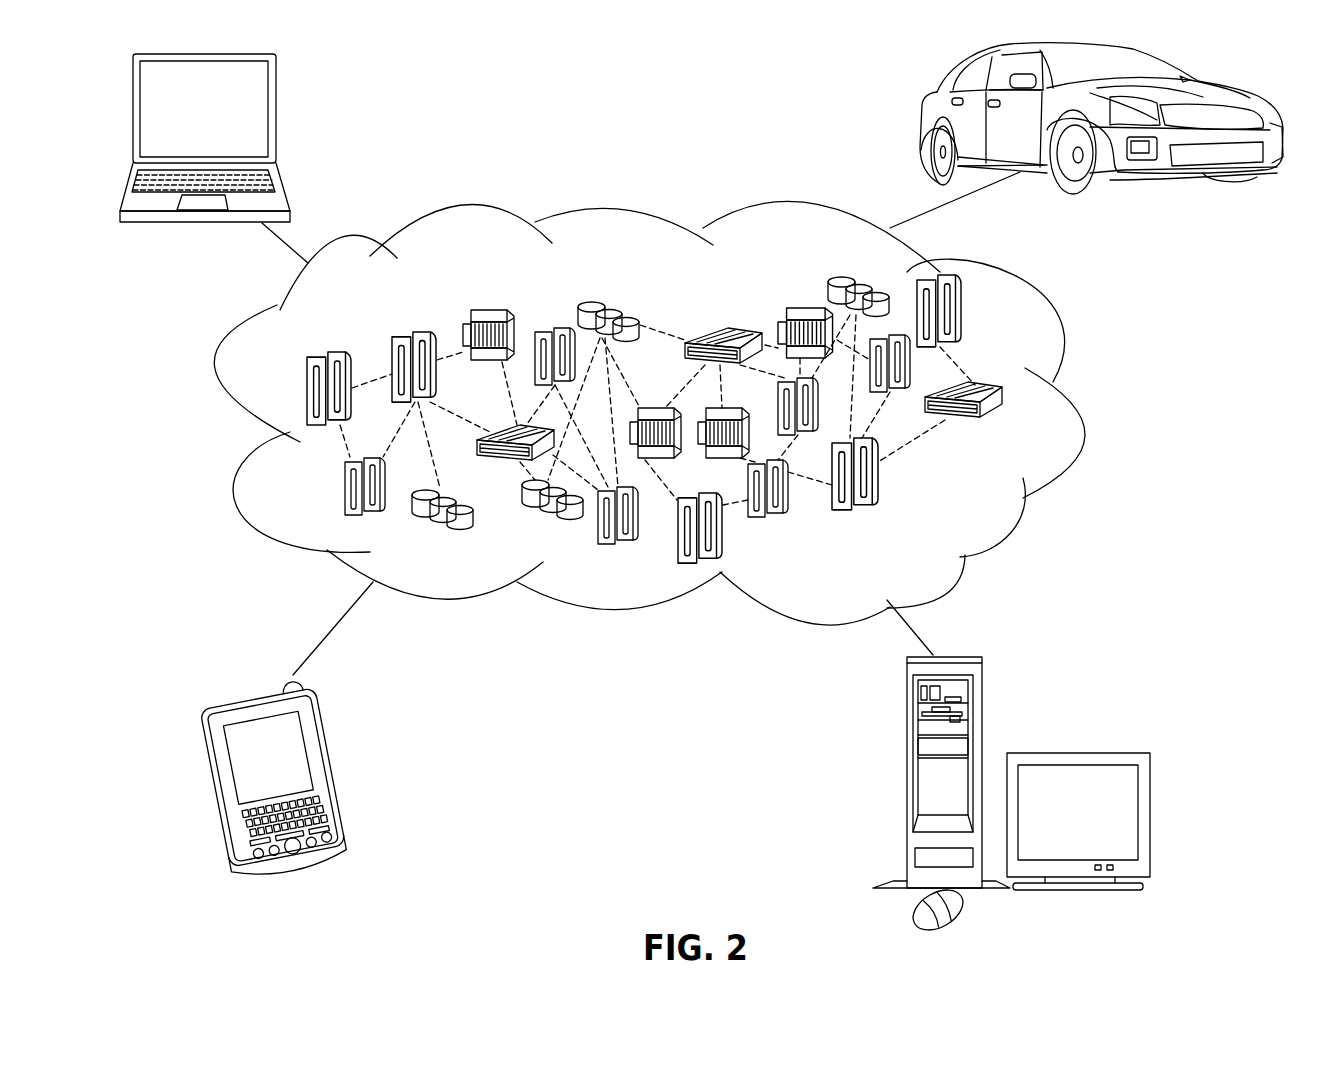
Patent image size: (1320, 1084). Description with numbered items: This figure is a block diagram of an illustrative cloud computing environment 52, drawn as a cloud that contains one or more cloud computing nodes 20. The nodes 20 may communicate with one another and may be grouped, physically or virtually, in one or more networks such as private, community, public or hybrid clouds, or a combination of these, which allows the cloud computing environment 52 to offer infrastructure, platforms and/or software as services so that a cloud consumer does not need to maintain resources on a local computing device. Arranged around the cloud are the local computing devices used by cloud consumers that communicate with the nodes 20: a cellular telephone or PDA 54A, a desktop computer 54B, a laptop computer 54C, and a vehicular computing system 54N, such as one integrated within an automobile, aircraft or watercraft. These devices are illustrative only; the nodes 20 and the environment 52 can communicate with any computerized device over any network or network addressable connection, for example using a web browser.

The cloud computing nodes 20 is at (988, 508).
The cloud computing environment 52 is at (1076, 403).
The cellular telephone or PDA 54A is at (330, 733).
The desktop computer 54B is at (905, 717).
The laptop computer 54C is at (275, 92).
The vehicular computing system 54N is at (920, 112).